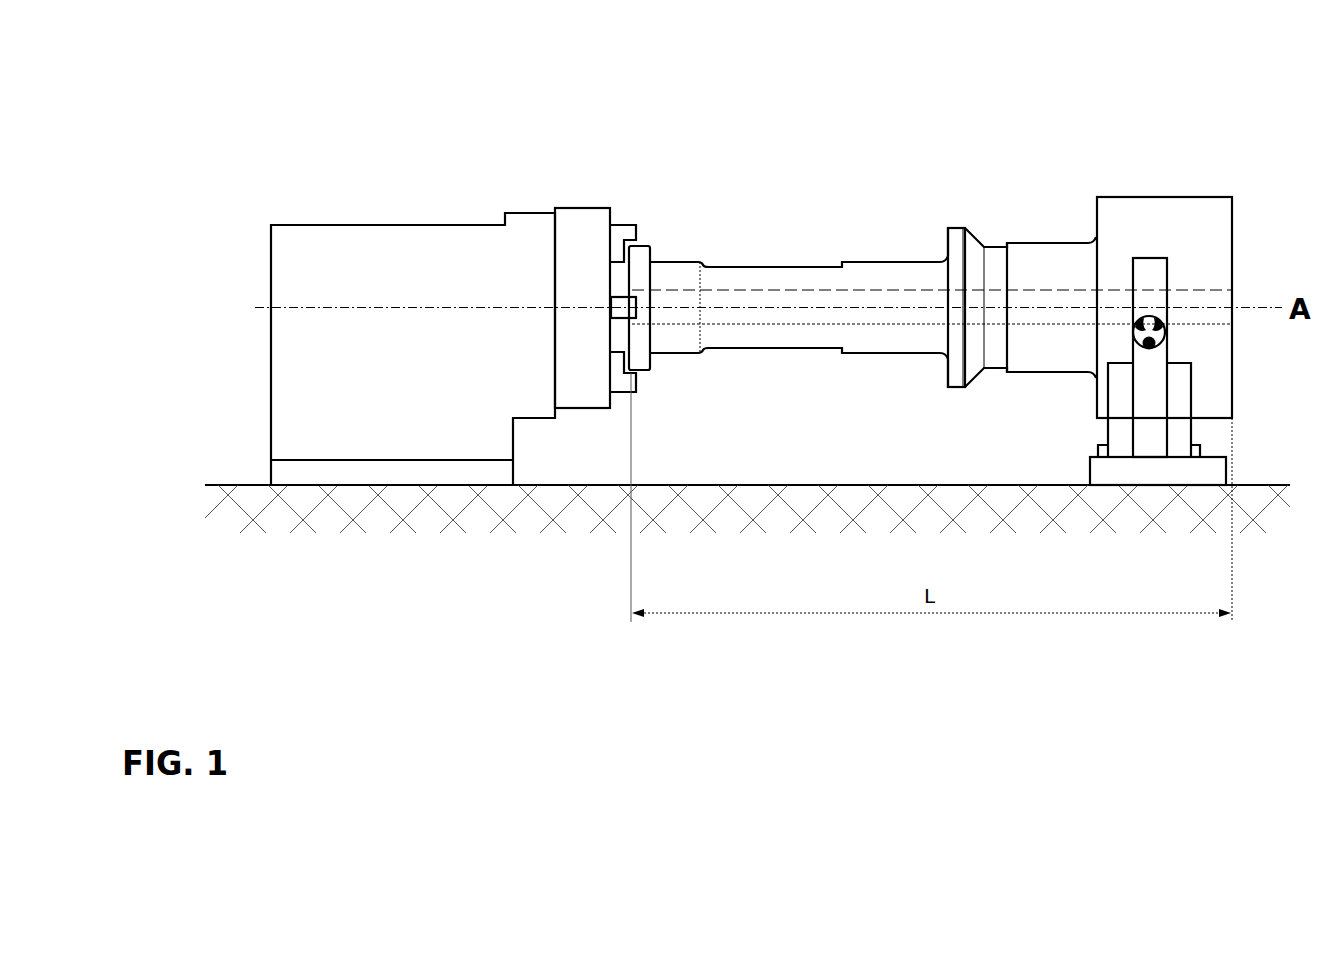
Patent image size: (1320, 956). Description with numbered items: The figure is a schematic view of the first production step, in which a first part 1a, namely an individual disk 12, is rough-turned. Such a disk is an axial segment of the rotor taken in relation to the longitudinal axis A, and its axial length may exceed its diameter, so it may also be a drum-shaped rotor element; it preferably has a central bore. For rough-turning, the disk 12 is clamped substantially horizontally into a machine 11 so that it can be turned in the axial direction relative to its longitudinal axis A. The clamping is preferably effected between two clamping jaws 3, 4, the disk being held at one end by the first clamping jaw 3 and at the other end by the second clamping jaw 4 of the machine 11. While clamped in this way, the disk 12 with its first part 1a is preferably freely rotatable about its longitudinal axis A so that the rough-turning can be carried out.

The chuck 3 is at (583, 250).
The workpiece shaft 12 is at (783, 277).
The collar of workpiece 1a is at (962, 219).
The support column with sensor 4 is at (1150, 273).
The housing 11 is at (1232, 245).